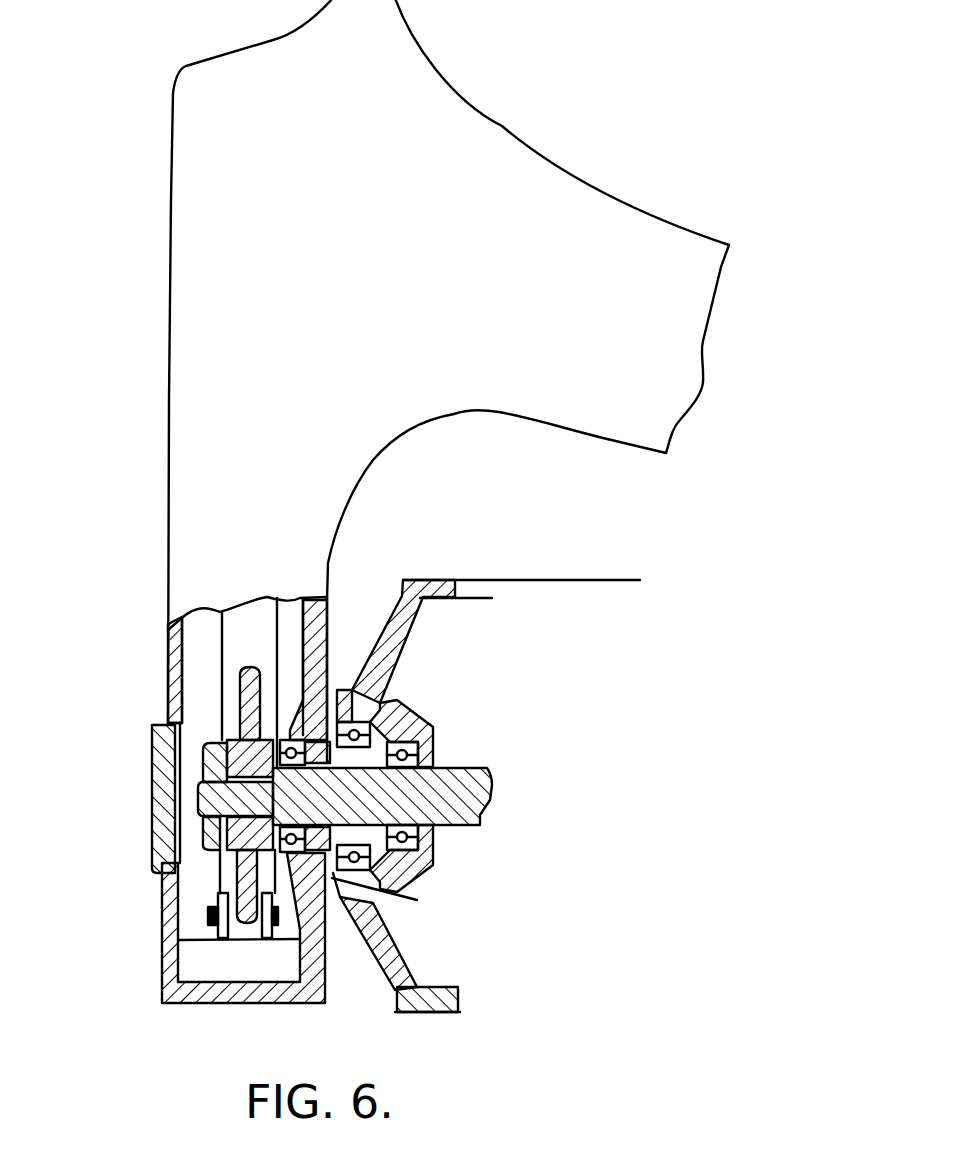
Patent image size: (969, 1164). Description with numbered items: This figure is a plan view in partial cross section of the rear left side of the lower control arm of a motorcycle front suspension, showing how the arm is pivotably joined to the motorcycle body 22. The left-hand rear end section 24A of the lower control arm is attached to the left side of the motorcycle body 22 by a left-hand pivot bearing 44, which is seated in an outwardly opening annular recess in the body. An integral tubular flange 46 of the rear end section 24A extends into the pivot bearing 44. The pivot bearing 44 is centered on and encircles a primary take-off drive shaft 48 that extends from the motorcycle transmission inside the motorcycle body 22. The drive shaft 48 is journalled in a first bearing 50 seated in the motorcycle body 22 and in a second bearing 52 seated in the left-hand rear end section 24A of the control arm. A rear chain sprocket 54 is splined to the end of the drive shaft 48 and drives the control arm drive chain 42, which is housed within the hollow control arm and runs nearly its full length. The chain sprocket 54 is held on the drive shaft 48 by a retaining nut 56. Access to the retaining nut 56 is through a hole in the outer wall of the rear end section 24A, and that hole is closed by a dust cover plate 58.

The left-hand rear end section 24A is at (168, 375).
The motorcycle body 22 is at (438, 578).
The second bearing 52 is at (290, 730).
The rear chain sprocket 54 is at (237, 695).
The retaining nut 56 is at (207, 763).
The dust cover plate 58 is at (155, 830).
The control arm drive chain 42 is at (217, 932).
The left-hand pivot bearing 44 is at (370, 693).
The tubular flange 46 is at (400, 717).
The first bearing 50 is at (423, 768).
The primary take-off drive shaft 48 is at (447, 768).